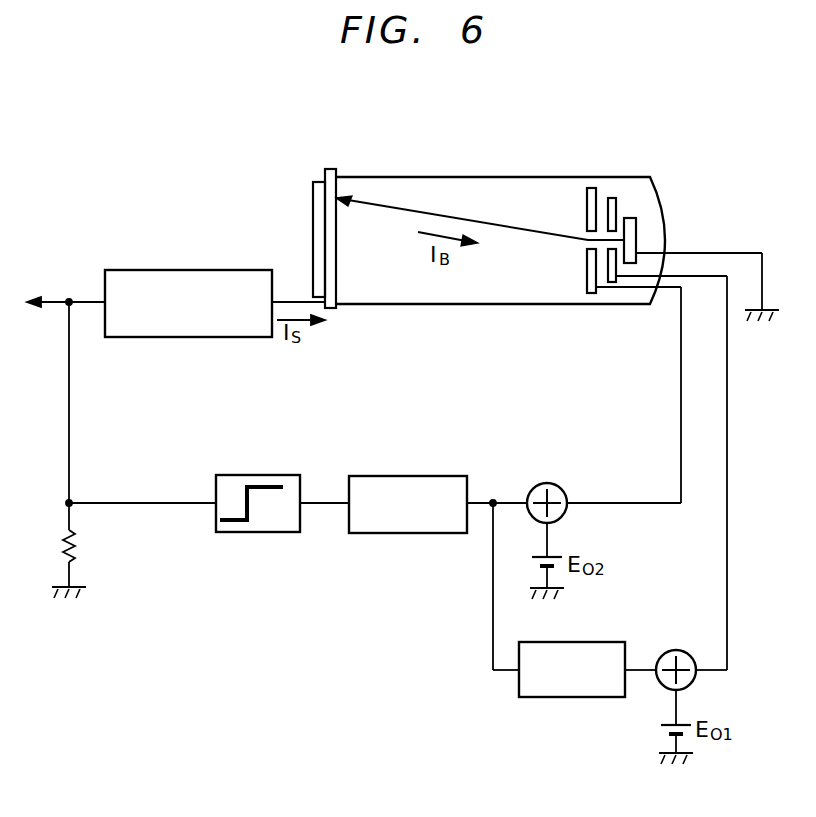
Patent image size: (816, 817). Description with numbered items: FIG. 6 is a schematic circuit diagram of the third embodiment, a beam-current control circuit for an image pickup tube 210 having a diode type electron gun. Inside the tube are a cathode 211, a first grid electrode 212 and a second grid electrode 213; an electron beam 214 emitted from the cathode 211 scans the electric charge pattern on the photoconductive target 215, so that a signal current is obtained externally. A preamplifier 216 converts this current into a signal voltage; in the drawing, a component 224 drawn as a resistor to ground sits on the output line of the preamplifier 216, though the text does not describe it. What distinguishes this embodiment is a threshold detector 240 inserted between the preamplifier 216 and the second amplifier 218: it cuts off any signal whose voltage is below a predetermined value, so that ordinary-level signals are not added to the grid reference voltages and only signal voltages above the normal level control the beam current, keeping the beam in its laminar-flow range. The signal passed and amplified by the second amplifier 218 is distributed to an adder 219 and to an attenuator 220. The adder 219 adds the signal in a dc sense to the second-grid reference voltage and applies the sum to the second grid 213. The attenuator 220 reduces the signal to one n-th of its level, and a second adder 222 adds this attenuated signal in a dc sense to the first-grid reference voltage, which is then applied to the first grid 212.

The image pickup tube 210 is at (472, 176).
The cathode 211 is at (636, 230).
The first grid electrode 212 is at (612, 198).
The second grid electrode 213 is at (591, 188).
The electron beam 214 is at (486, 219).
The photoconductive target 215 is at (332, 167).
The preamplifier 216 is at (228, 270).
The second amplifier 218 is at (430, 476).
The adder 219 is at (548, 484).
The attenuator 220 is at (583, 642).
The adder 222 is at (678, 650).
The resistor 224 is at (80, 549).
The threshold detector 240 is at (257, 475).